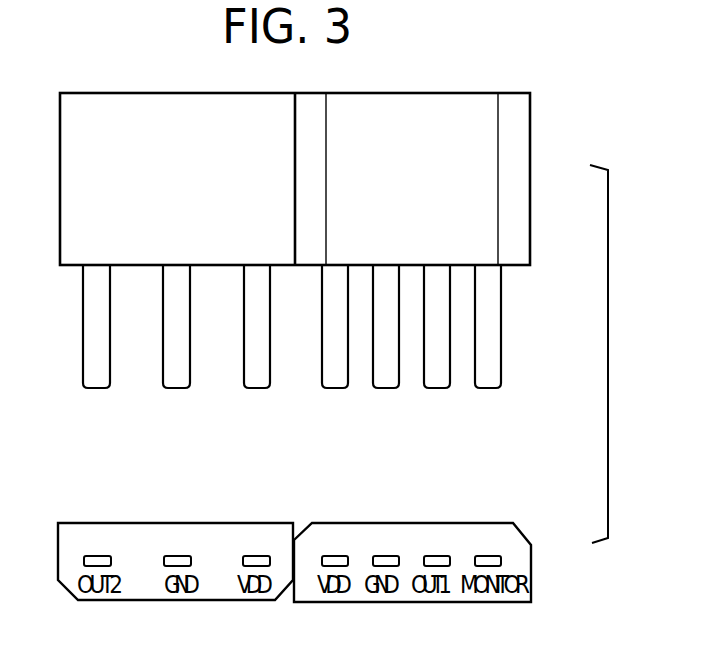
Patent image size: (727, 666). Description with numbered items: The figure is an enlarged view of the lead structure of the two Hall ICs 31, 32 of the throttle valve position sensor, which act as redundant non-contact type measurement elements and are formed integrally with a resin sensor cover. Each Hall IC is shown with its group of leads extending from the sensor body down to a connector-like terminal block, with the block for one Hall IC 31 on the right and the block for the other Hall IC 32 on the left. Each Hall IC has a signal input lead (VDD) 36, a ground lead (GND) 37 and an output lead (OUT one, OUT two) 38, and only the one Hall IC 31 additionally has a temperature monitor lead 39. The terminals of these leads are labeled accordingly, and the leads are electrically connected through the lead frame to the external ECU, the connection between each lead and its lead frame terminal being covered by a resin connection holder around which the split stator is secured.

The Hall IC 31 is at (437, 603).
The Hall IC 32 is at (208, 600).
The signal input lead 36 is at (269, 362).
The ground lead 37 is at (163, 360).
The output lead 38 is at (83, 360).
The temperature monitor lead 39 is at (501, 363).